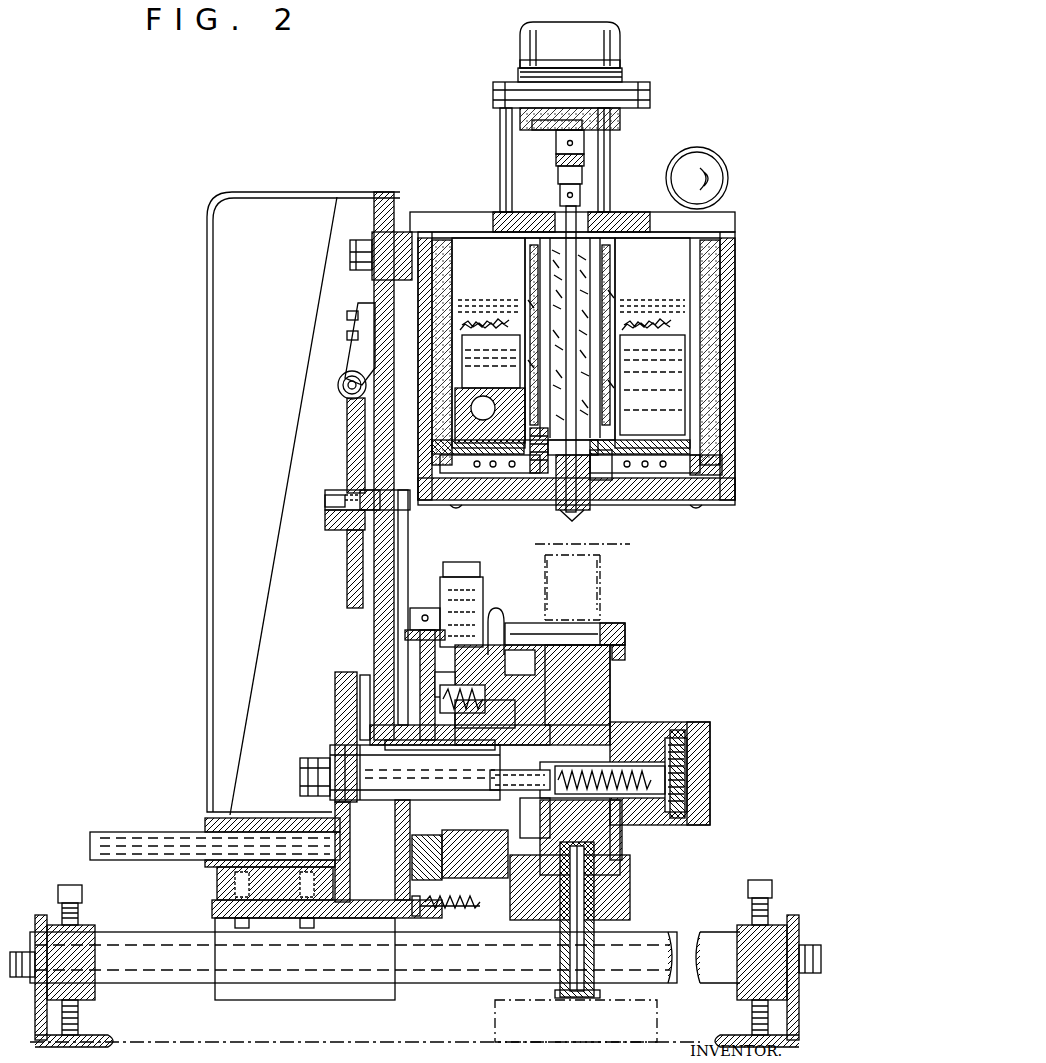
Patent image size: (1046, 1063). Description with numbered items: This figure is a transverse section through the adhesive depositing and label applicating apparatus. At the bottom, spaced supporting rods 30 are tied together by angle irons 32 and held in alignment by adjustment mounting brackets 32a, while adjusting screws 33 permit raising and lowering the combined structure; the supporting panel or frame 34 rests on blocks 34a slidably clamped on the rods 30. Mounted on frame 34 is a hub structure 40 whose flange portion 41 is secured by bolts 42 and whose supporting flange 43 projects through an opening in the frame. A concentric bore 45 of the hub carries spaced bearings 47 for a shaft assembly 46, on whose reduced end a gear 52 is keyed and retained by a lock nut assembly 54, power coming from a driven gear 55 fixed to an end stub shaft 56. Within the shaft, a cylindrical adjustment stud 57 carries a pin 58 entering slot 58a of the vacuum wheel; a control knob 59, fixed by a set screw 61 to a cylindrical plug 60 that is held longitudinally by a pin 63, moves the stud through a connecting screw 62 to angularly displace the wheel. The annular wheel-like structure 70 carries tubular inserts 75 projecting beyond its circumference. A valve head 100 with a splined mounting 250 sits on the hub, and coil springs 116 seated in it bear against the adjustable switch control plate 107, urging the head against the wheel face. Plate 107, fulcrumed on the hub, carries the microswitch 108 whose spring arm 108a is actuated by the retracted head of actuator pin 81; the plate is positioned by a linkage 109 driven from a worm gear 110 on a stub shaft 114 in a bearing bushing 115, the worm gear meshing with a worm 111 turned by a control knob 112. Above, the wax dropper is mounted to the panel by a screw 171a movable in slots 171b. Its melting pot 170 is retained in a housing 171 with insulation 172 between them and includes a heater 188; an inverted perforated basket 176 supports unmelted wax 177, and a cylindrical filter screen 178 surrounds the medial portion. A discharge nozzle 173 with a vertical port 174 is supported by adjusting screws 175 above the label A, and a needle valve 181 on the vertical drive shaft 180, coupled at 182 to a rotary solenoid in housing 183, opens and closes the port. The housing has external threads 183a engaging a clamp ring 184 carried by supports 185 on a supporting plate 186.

The solenoid housing 183 is at (612, 40).
The external threads 183a is at (605, 82).
The clamp ring 184 is at (648, 92).
The supports 185 is at (503, 143).
The coupling 182 is at (587, 146).
The vertical rod or drive shaft 180 is at (593, 212).
The supporting plate 186 is at (660, 180).
The slots 171b is at (400, 214).
The housing 171 is at (736, 275).
The screw 171a is at (350, 250).
The insulation 172 is at (718, 342).
The melting pot 170 is at (455, 278).
The unmelted wax or adhesive 177 is at (480, 318).
The cylindrical filter screen 178 is at (618, 275).
The inverted perforated basket 176 is at (632, 318).
The needle valve 181 is at (598, 432).
The adjusting screws 175 is at (495, 500).
The heater 188 is at (727, 457).
The vertical port 174 is at (558, 510).
The discharge nozzle 173 is at (590, 500).
The label A is at (630, 542).
The control knob 112 is at (340, 380).
The worm 111 is at (346, 392).
The bearing bushing 115 is at (362, 488).
The stub shaft 114 is at (328, 502).
The worm gear 110 is at (352, 540).
The supporting panel or frame 34 is at (375, 640).
The linkage 109 is at (410, 562).
The adjustable switch control plate 107 is at (418, 625).
The microswitch 108 is at (478, 586).
The microswitch spring arm 108a is at (490, 616).
The annular wheel-like structure 70 is at (598, 640).
The hub structure 40 is at (470, 738).
The coil springs 116 is at (455, 684).
The concentric bore 45 is at (470, 726).
The pin 58 is at (592, 722).
The control knob 59 is at (712, 806).
The shaft assembly 46 is at (605, 724).
The slot 58a is at (636, 724).
The cylindrical plug 60 is at (688, 745).
The set screw 61 is at (712, 745).
The bearings 47 is at (392, 752).
The splined mounting 250 is at (460, 822).
The lock nut assembly 54 is at (322, 766).
The gear 52 is at (340, 716).
The supporting flange 43 is at (375, 722).
The cylindrical adjustment stud 57 is at (600, 830).
The connecting screw 62 is at (620, 822).
The pin 63 is at (660, 825).
The tubular inserts 75 is at (600, 872).
The actuator pin 81 is at (445, 910).
The valve head 100 is at (470, 876).
The flange portion 41 is at (418, 880).
The bolts 42 is at (403, 895).
The end stub shaft 56 is at (165, 832).
The driven gear 55 is at (345, 918).
The blocks 34a is at (278, 998).
The supporting rods 30 is at (640, 934).
The angle irons 32 is at (42, 920).
The adjustment mounting brackets 32a is at (83, 945).
The adjusting screws 33 is at (68, 885).